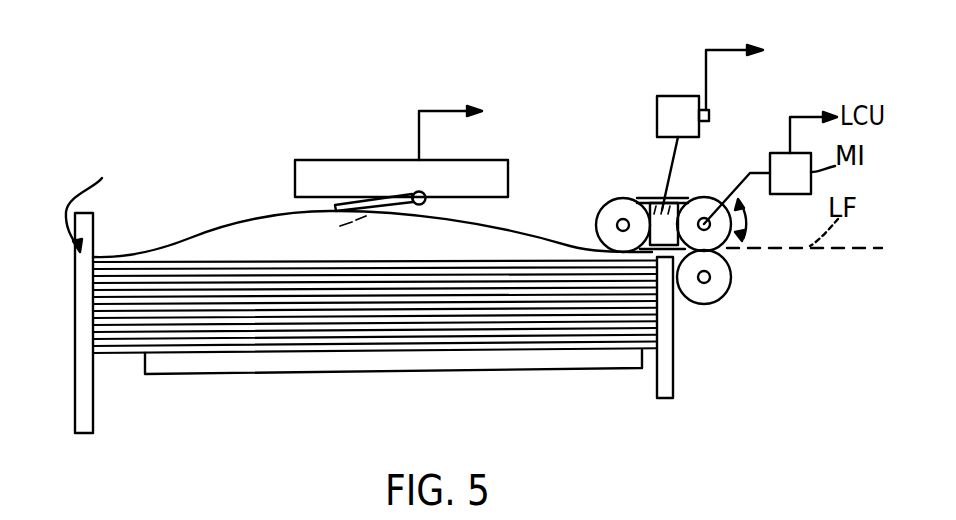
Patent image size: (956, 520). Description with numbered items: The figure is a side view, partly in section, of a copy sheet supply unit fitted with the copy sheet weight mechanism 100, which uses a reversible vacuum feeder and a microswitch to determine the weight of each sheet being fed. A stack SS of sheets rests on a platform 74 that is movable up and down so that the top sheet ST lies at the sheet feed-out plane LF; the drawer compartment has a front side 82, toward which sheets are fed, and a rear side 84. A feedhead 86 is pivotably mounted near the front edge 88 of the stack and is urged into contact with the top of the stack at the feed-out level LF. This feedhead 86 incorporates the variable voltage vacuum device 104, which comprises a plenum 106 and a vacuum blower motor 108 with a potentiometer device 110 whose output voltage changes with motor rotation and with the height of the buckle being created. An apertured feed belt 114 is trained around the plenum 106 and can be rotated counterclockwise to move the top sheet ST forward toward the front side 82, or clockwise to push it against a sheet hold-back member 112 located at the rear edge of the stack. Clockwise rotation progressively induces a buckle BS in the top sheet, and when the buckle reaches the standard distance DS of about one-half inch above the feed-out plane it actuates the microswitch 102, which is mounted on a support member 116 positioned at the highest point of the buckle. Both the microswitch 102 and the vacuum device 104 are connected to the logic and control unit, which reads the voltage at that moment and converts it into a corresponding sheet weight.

The platform 74 is at (602, 372).
The front side 82 is at (675, 388).
The rear side 84 is at (97, 408).
The feedhead 86 is at (595, 213).
The front edge of the stack 88 is at (632, 326).
The copy sheet weight mechanism 100 is at (303, 156).
The microswitch 102 is at (358, 204).
The variable voltage vacuum device 104 is at (670, 167).
The plenum 106 is at (670, 197).
The vacuum blower motor 108 is at (680, 96).
The potentiometer device 110 is at (709, 116).
The sheet hold-back member 112 is at (95, 202).
The apertured feed belt 114 is at (724, 250).
The support member 116 is at (508, 172).